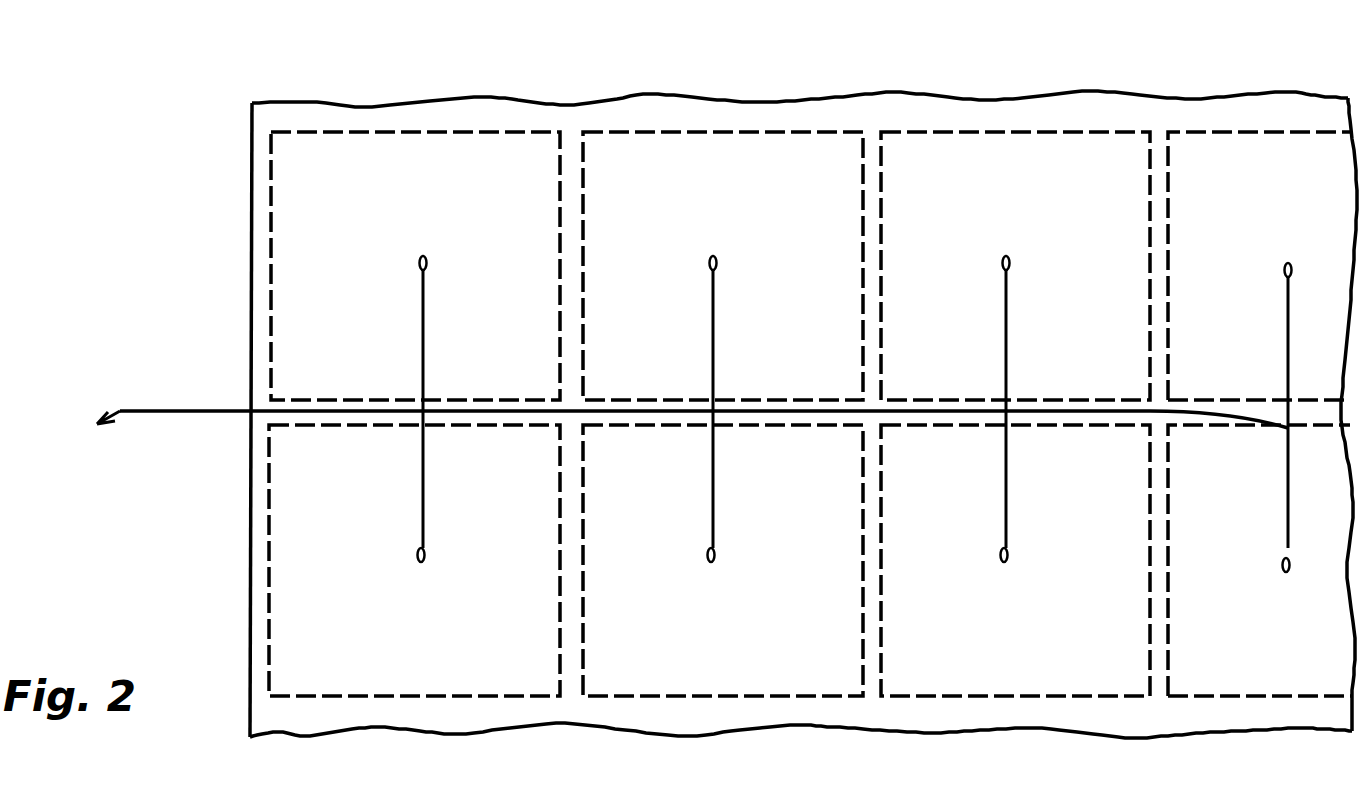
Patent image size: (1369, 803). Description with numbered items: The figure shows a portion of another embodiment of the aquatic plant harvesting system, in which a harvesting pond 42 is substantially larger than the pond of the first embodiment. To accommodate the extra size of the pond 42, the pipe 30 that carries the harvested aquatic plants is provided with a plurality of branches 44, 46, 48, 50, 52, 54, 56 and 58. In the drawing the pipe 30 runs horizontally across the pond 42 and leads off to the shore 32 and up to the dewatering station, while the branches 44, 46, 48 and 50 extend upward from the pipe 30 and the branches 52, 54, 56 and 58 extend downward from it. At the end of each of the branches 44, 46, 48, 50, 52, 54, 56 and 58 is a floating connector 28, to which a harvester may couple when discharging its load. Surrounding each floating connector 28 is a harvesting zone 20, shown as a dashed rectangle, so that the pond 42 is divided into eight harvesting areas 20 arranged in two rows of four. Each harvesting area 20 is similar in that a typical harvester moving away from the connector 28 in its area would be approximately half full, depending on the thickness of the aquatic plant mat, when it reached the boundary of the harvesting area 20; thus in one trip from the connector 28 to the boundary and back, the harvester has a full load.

The harvesting zone 20 is at (385, 365).
The floating pipe connector 28 is at (430, 258).
The pipe 30 is at (655, 415).
The shore 32 is at (197, 164).
The harvesting pond 42 is at (537, 113).
The branch 44 is at (425, 305).
The branch 46 is at (715, 307).
The branch 48 is at (1008, 302).
The branch 50 is at (1288, 305).
The branch 52 is at (424, 487).
The branch 54 is at (714, 485).
The branch 56 is at (1007, 482).
The branch 58 is at (1288, 488).